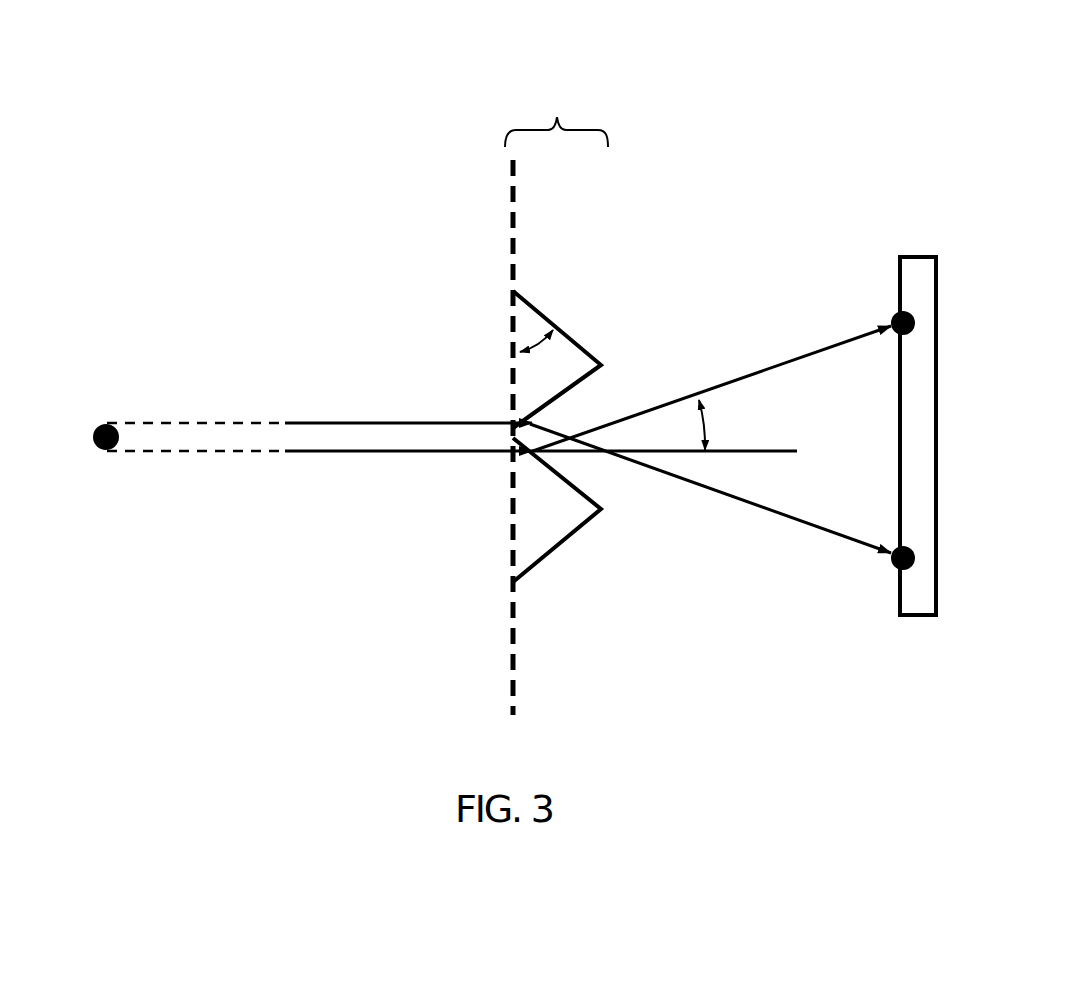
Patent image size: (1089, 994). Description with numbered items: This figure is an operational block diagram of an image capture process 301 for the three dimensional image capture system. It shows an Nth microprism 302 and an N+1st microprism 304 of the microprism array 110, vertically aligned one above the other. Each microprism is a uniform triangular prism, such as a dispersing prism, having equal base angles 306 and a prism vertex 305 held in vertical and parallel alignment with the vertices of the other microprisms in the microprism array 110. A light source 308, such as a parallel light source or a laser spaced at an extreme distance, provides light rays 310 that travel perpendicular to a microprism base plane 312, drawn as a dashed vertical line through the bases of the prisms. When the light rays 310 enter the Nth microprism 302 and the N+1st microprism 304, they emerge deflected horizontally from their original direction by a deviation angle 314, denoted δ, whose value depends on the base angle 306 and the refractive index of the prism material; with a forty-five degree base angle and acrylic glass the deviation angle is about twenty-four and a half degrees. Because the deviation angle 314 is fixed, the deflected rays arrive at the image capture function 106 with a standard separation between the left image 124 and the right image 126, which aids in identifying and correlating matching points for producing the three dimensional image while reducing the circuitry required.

The image capture process 301 is at (205, 100).
The microprism base plane 312 is at (511, 212).
The microprism array 110 is at (557, 117).
The Nth microprism 302 is at (575, 362).
The N+1st microprism 304 is at (560, 520).
The prism vertex 305 is at (603, 509).
The base angle 306 is at (535, 340).
The light source 308 is at (103, 450).
The light rays 310 is at (450, 455).
The deviation angle 314 is at (710, 425).
The image capture function 106 is at (918, 445).
The right image 126 is at (910, 323).
The left image 124 is at (912, 558).